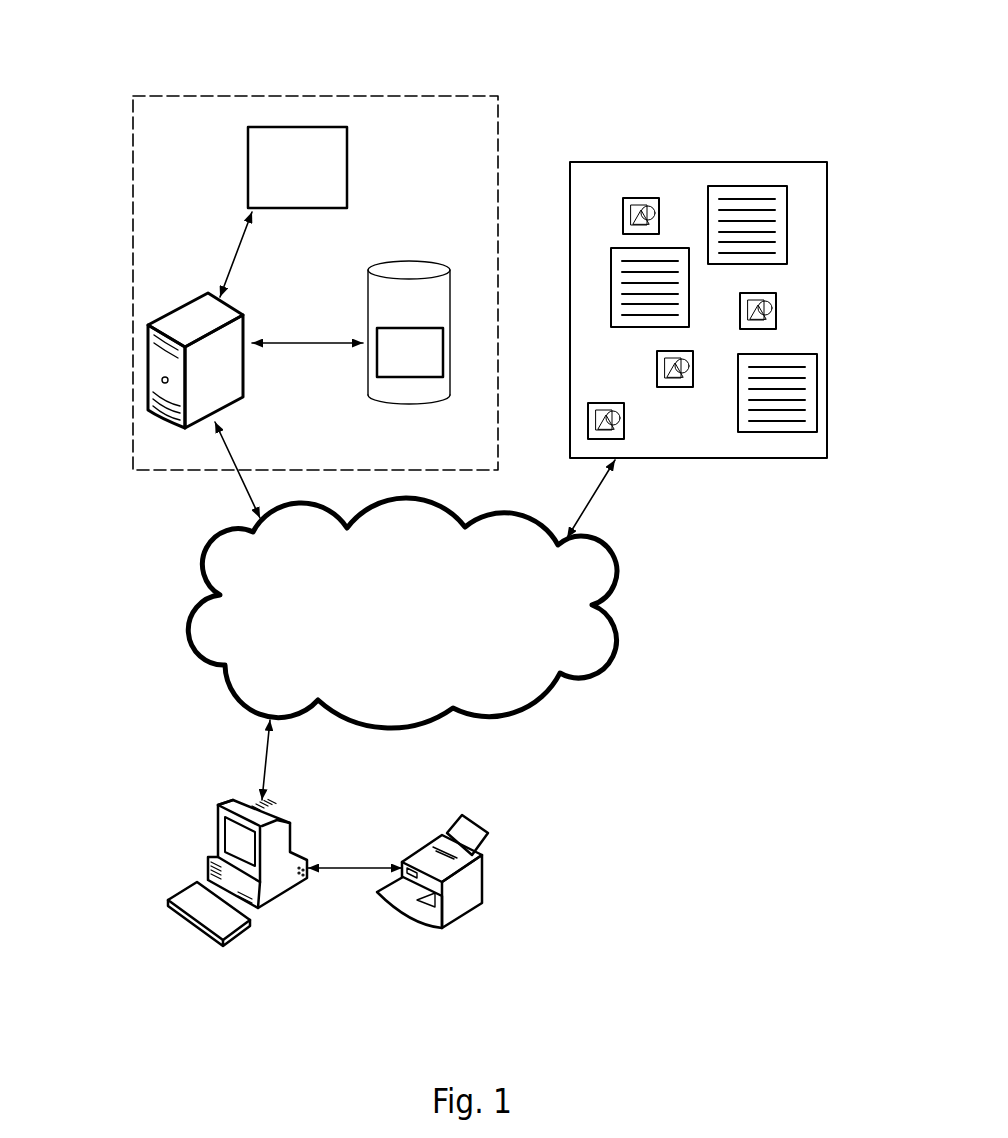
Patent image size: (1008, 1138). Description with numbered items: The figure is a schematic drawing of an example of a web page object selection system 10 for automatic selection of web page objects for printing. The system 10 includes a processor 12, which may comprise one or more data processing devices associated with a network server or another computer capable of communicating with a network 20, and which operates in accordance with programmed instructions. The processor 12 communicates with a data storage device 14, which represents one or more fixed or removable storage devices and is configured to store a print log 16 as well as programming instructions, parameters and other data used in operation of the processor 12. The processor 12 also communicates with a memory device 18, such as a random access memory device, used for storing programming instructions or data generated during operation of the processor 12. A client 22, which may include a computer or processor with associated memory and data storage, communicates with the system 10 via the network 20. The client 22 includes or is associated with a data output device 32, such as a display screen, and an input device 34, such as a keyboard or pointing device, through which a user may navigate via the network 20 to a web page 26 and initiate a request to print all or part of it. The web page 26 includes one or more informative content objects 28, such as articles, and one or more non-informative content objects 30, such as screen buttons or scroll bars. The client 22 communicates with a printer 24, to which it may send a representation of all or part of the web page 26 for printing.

The web page object selection system 10 is at (205, 95).
The processor 12 is at (152, 328).
The data storage device 14 is at (418, 257).
The print log 16 is at (443, 353).
The RAM memory 18 is at (350, 168).
The network 20 is at (188, 610).
The client 22 is at (196, 847).
The printer 24 is at (482, 865).
The web page 26 is at (648, 162).
The informative content objects 28 is at (777, 187).
The non-informative content objects 30 is at (657, 368).
The data output device 32 is at (233, 848).
The input device 34 is at (180, 900).